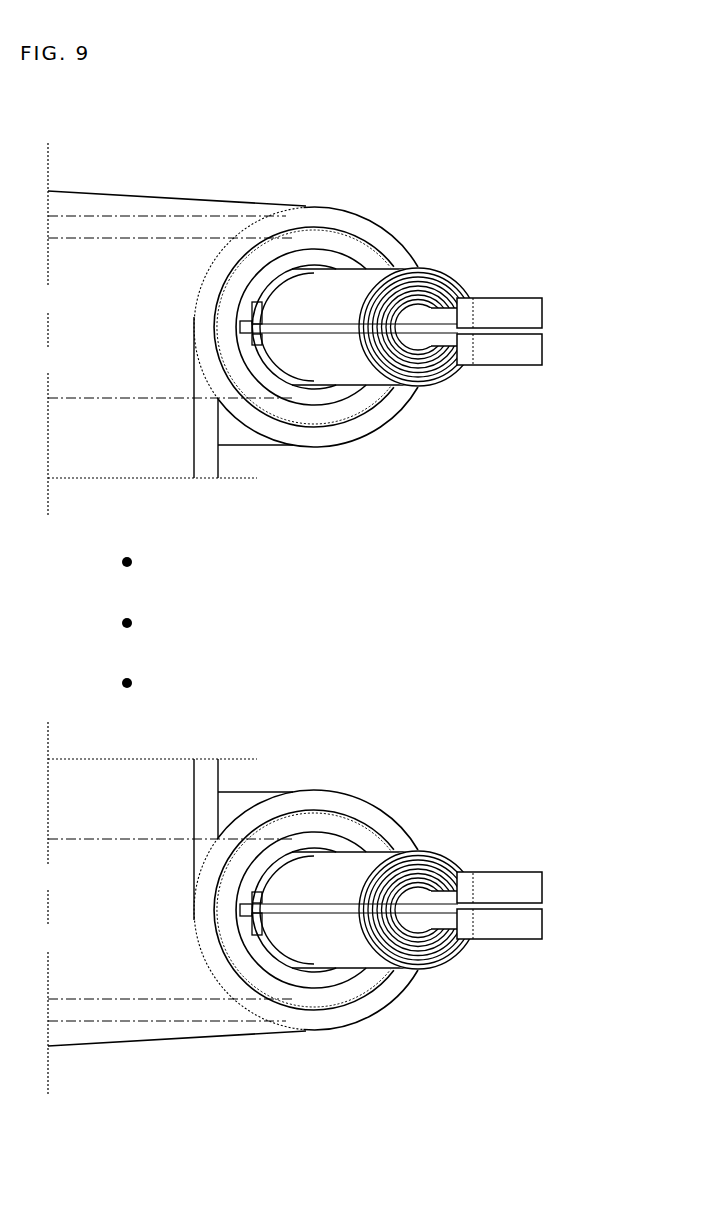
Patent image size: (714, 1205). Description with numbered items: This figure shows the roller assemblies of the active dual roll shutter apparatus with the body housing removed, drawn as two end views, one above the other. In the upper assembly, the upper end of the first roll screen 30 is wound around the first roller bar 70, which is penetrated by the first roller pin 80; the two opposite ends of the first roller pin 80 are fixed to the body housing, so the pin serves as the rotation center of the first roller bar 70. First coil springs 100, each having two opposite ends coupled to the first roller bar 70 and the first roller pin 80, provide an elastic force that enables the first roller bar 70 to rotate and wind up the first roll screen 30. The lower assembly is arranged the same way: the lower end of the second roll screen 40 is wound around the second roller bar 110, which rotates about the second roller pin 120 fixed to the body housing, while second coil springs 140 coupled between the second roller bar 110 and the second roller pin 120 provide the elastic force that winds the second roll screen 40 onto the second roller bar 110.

The first roll screen 30 is at (178, 197).
The second roll screen 40 is at (335, 1025).
The first roller bar 70 is at (318, 240).
The second roller bar 110 is at (283, 1000).
The first coil springs 100 is at (355, 283).
The second coil springs 140 is at (357, 868).
The first roller pin 80 is at (513, 355).
The second roller pin 120 is at (507, 930).